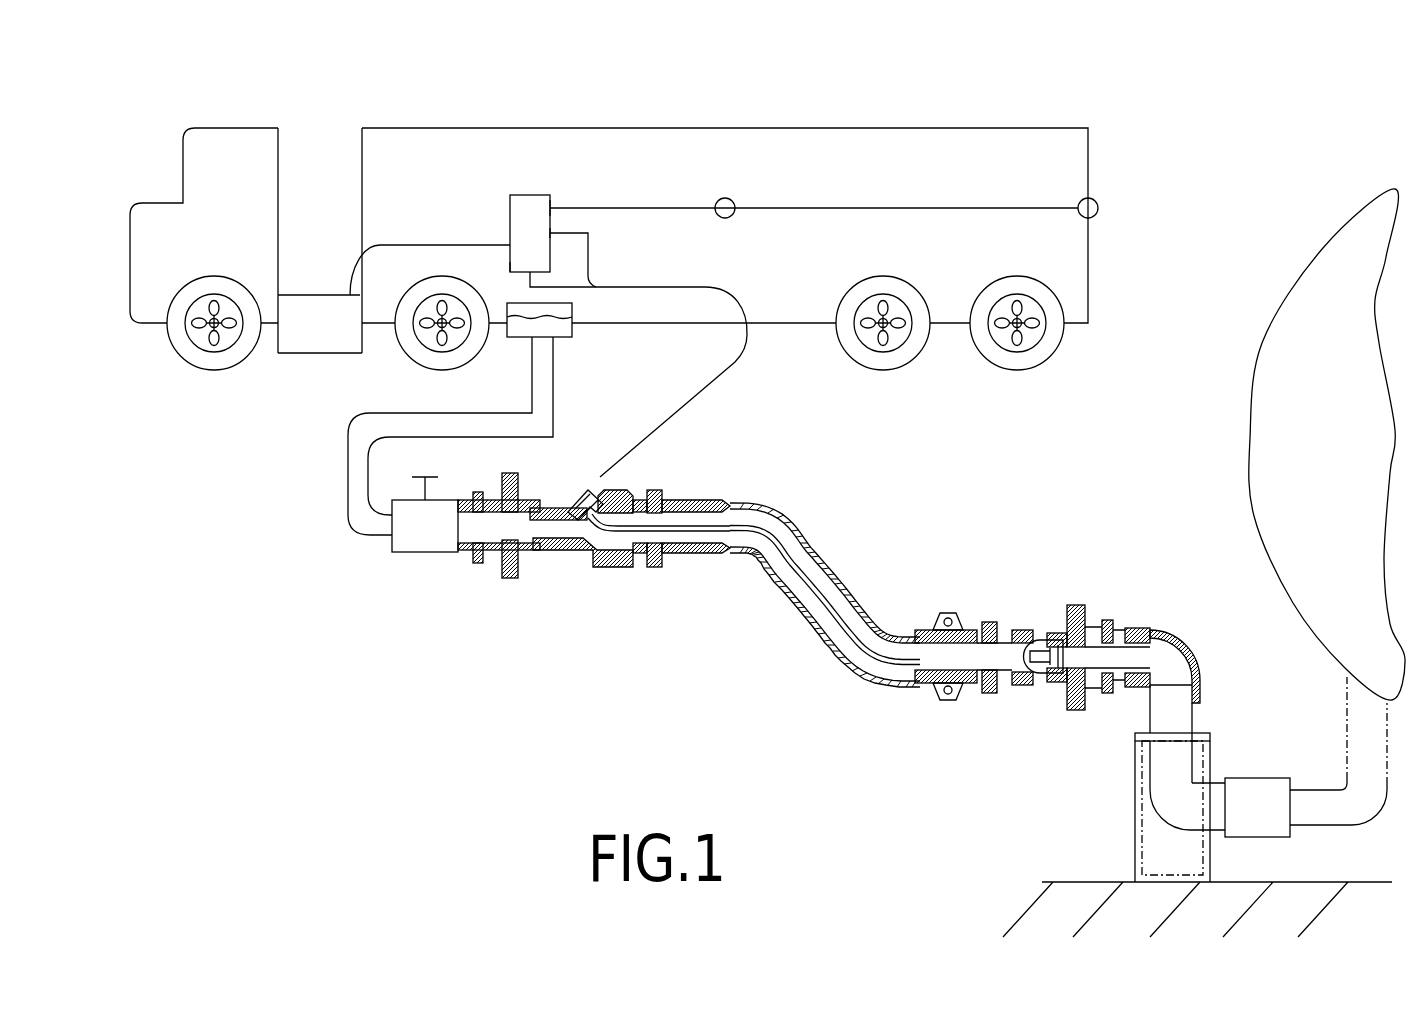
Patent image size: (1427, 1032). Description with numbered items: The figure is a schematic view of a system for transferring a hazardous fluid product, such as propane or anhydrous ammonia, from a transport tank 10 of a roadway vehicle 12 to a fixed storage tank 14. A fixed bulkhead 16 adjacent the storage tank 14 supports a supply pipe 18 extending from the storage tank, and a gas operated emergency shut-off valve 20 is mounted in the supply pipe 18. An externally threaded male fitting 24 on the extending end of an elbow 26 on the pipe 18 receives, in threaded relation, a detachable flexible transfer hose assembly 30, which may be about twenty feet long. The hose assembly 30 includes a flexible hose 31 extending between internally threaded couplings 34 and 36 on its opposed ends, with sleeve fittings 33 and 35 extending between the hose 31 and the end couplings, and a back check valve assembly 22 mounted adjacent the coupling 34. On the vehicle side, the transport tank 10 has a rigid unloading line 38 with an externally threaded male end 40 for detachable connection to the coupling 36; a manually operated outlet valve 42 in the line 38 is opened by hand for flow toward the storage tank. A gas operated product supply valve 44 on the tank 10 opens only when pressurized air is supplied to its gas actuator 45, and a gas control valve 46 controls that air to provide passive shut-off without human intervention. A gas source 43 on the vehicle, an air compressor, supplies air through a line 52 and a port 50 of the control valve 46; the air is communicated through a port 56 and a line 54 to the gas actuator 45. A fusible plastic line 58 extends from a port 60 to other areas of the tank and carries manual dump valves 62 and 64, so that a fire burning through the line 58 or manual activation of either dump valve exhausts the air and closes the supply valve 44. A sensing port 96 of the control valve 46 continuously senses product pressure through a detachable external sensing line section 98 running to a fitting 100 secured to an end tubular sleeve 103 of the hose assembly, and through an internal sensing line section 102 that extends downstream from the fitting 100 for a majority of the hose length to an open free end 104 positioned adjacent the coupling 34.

The transport tank 10 is at (943, 157).
The roadway vehicle 12 is at (400, 118).
The fixed storage tank 14 is at (1286, 335).
The fixed bulkhead 16 is at (1147, 782).
The supply pipe 18 is at (1305, 790).
The gas operated emergency shut-off valve 20 is at (1268, 778).
The back check valve assembly 22 is at (1027, 627).
The externally threaded male fitting 24 is at (1098, 684).
The elbow 26 is at (1188, 640).
The detachable flexible transfer hose assembly 30 is at (835, 577).
The flexible hose 31 is at (867, 622).
The sleeve fitting 33 is at (977, 683).
The internally threaded coupling 34 is at (1077, 611).
The sleeve fitting 35 is at (658, 500).
The internally threaded coupling 36 is at (518, 483).
The rigid unloading line 38 is at (347, 508).
The externally threaded male end 40 is at (493, 557).
The manually operated outlet valve 42 is at (407, 542).
The gas source 43 is at (290, 343).
The gas operated product supply valve 44 is at (572, 337).
The gas actuator 45 is at (573, 308).
The gas control valve 46 is at (513, 213).
The port 50 is at (511, 248).
The line 52 is at (380, 246).
The line 54 is at (589, 257).
The port 56 is at (551, 233).
The line 58 is at (613, 207).
The port 60 is at (551, 207).
The manual dump valve 62 is at (733, 213).
The manual dump valve 64 is at (1080, 224).
The sensing port 96 is at (531, 273).
The external sensing line section 98 is at (737, 313).
The fitting 100 is at (601, 477).
The internal sensing line section 102 is at (764, 549).
The end tubular sleeve 103 is at (588, 553).
The open free end 104 is at (1021, 681).